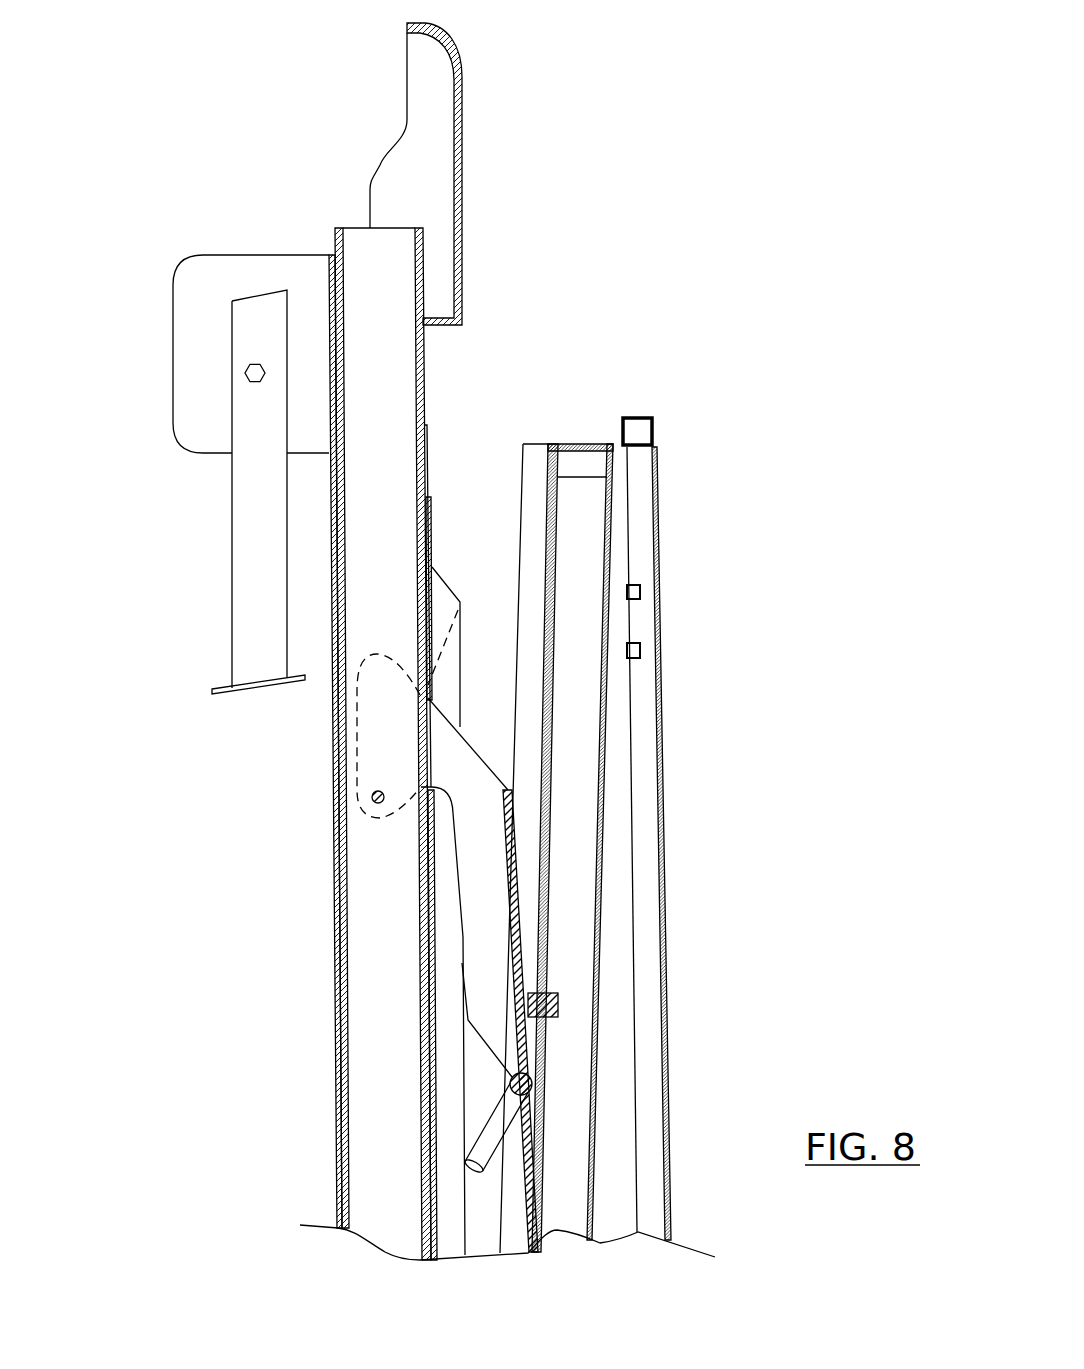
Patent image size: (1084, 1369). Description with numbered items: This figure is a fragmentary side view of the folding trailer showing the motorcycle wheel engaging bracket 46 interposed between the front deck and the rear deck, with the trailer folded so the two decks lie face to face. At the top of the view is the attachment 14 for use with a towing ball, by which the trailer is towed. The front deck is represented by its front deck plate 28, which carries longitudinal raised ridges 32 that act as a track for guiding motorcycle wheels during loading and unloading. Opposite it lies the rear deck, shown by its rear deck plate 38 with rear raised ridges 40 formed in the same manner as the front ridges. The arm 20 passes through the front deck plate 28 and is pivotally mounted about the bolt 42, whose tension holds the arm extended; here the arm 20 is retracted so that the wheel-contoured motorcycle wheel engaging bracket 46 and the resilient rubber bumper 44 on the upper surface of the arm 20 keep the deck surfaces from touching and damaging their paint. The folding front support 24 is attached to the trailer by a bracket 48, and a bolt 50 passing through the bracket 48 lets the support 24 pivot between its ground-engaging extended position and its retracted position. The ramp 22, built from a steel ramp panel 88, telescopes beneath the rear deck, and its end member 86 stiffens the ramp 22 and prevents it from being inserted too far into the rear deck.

The attachment for use with a towing ball 14 is at (435, 113).
The arm 20 is at (490, 937).
The ramp 22 is at (642, 733).
The folding front support 24 is at (253, 513).
The front deck plate 28 is at (418, 908).
The raised ridges 32 is at (450, 1072).
The rear deck plate 38 is at (550, 825).
The rear raised ridges 40 is at (533, 522).
The bolt 42 is at (373, 795).
The bumper 44 is at (558, 1005).
The motorcycle wheel engaging bracket 46 is at (497, 1128).
The bracket 48 is at (195, 278).
The bolt 50 is at (245, 372).
The end member 86 is at (638, 430).
The ramp panel 88 is at (627, 550).